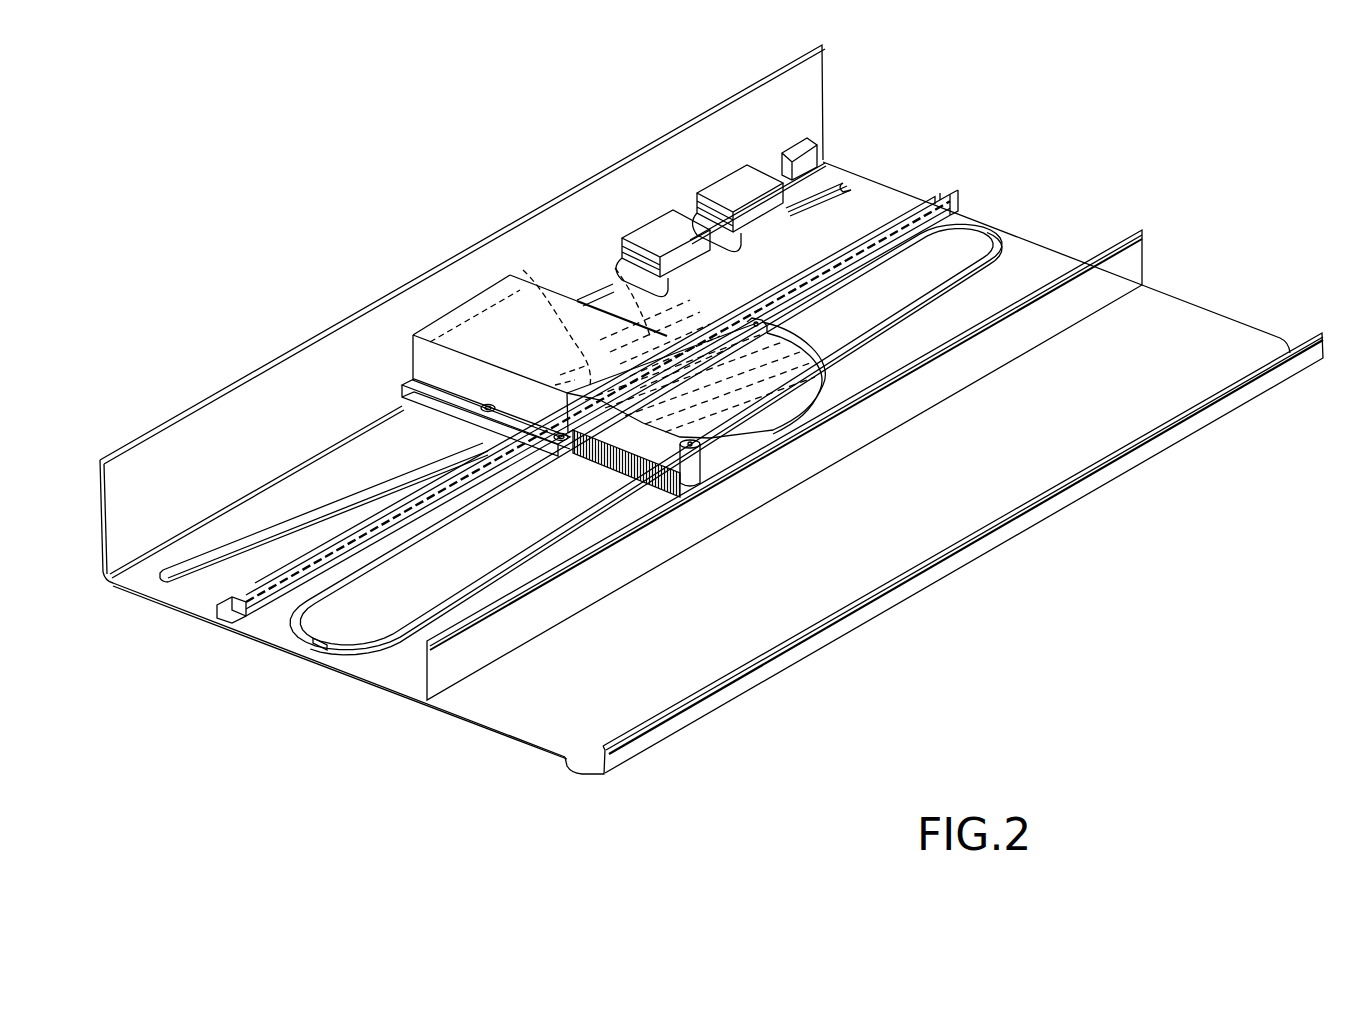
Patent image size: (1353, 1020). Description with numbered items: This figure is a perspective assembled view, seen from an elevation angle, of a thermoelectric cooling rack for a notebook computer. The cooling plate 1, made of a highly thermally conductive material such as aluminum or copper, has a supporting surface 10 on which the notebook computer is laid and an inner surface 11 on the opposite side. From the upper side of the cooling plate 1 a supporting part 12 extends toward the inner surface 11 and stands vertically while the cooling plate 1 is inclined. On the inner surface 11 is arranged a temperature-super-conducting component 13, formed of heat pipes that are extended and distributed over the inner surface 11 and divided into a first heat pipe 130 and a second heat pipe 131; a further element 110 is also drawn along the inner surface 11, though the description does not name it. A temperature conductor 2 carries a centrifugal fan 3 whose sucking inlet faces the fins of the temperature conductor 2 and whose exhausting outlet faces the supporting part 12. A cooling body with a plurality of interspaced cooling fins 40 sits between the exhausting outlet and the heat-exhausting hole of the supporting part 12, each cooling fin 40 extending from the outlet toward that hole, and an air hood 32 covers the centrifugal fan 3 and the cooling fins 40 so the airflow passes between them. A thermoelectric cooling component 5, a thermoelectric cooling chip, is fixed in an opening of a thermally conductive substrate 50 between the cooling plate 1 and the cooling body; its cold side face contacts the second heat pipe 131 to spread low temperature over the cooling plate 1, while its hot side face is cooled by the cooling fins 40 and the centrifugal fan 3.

The cooling plate 1 is at (1012, 565).
The supporting surface 10 is at (315, 668).
The inner surface 11 is at (1033, 258).
The supporting part 12 is at (270, 366).
The temperature-super-conducting component 13 is at (985, 112).
The first heat pipe 130 is at (977, 232).
The second heat pipe 131 is at (843, 183).
The guide bar 110 is at (205, 625).
The temperature conductor 2 is at (482, 522).
The centrifugal fan 3 is at (488, 403).
The air hood 32 is at (485, 313).
The cooling fin 40 is at (430, 357).
The thermoelectric cooling component 5 is at (523, 270).
The substrate 50 is at (400, 397).